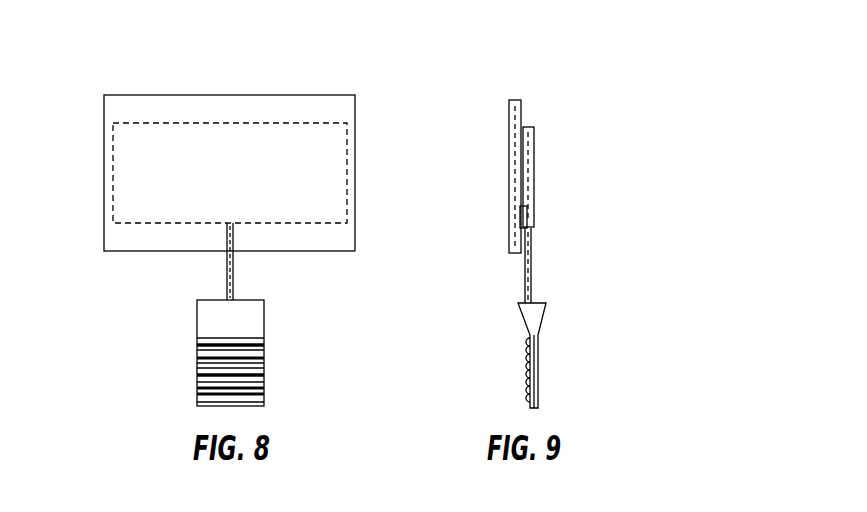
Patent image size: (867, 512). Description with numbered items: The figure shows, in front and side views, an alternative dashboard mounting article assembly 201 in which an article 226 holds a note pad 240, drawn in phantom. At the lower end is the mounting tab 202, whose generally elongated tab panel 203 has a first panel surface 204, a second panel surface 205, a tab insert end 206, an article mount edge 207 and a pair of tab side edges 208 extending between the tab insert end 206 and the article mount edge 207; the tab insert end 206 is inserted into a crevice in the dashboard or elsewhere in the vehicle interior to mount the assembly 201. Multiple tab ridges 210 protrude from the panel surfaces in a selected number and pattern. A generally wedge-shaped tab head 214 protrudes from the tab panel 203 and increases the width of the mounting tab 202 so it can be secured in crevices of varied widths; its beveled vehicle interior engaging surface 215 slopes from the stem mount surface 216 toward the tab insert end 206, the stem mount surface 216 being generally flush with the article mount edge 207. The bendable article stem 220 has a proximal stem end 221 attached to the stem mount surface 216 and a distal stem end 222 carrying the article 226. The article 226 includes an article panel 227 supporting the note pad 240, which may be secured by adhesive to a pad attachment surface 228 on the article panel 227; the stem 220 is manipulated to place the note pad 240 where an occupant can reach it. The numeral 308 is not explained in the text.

In FIG. 8, the dashboard mounting article assembly 201 is at (118, 48).
In FIG. 9, the dashboard mounting article assembly 201 is at (562, 77).
In FIG. 8, the mounting tab 202 is at (280, 330).
In FIG. 9, the mounting tab 202 is at (513, 353).
In FIG. 8, the tab panel 203 is at (272, 392).
In FIG. 9, the tab panel 203 is at (547, 348).
In FIG. 8, the first panel surface 204 is at (266, 350).
In FIG. 9, the first panel surface 204 is at (529, 397).
In FIG. 9, the second panel surface 205 is at (541, 362).
In FIG. 8, the tab insert end 206 is at (215, 404).
In FIG. 9, the tab insert end 206 is at (537, 410).
In FIG. 9, the article mount edge 207 is at (549, 300).
In FIG. 8, the tab side edges 208 is at (267, 359).
In FIG. 8, the tab ridges 210 is at (196, 382).
In FIG. 9, the tab ridges 210 is at (529, 372).
In FIG. 8, the tab head 214 is at (196, 324).
In FIG. 9, the tab head 214 is at (519, 327).
In FIG. 8, the vehicle interior engaging surface 215 is at (200, 302).
In FIG. 9, the vehicle interior engaging surface 215 is at (547, 325).
In FIG. 8, the stem mount surface 216 is at (210, 300).
In FIG. 9, the stem mount surface 216 is at (519, 303).
In FIG. 8, the article stem 220 is at (246, 268).
In FIG. 9, the article stem 220 is at (541, 267).
In FIG. 8, the proximal stem end 221 is at (236, 288).
In FIG. 9, the proximal stem end 221 is at (537, 305).
In FIG. 9, the distal stem end 222 is at (531, 229).
In FIG. 8, the article 226 is at (236, 116).
In FIG. 9, the article 226 is at (539, 148).
In FIG. 8, the article panel 227 is at (315, 194).
In FIG. 9, the article panel 227 is at (531, 194).
In FIG. 9, the pad attachment surface 228 is at (519, 205).
In FIG. 8, the note pad 240 is at (337, 119).
In FIG. 9, the note pad 240 is at (511, 120).
In FIG. 9, the lower ridge 308 is at (541, 387).